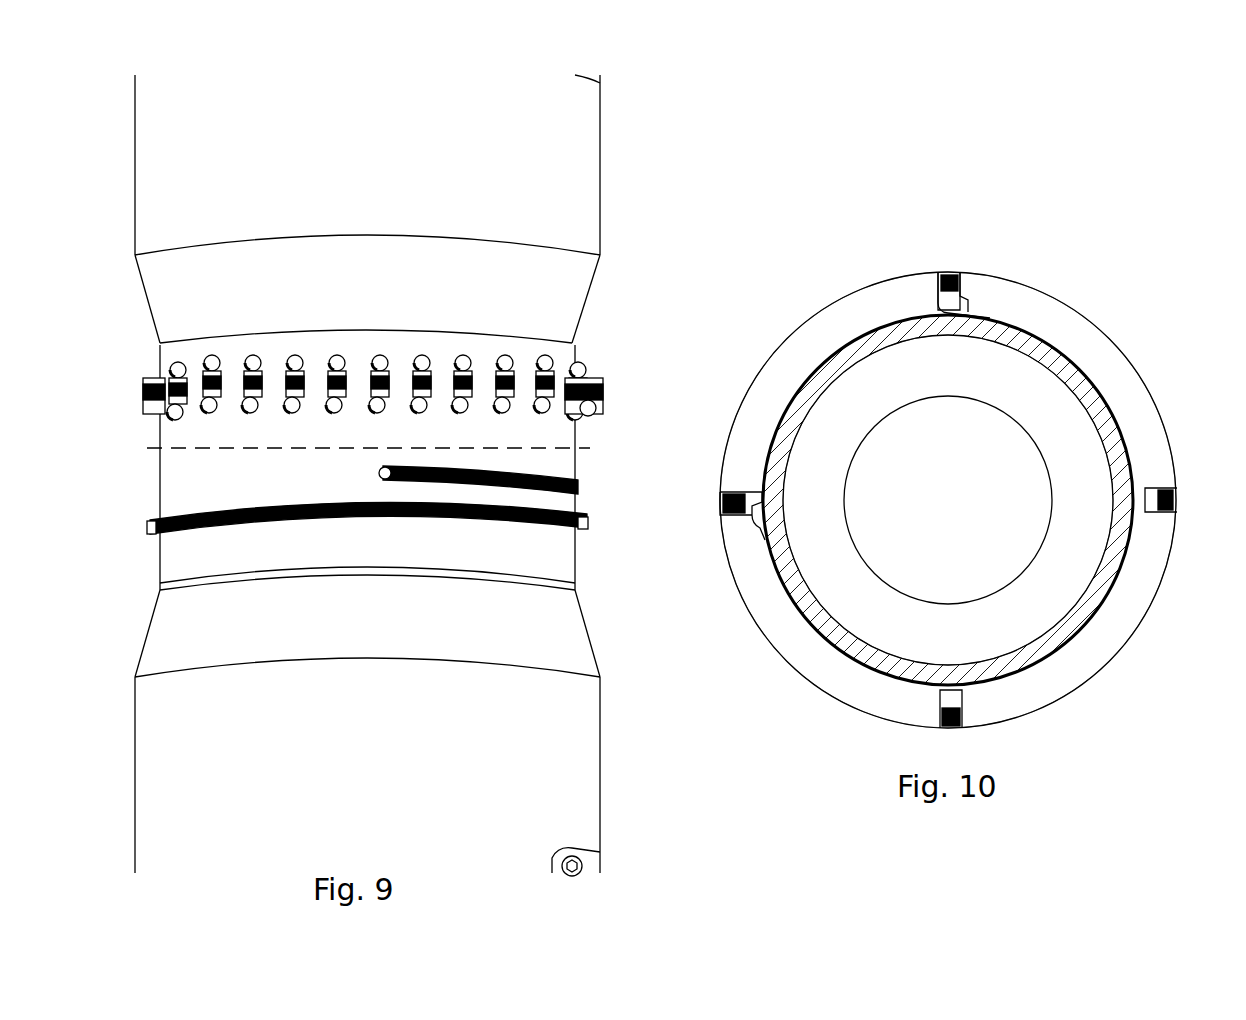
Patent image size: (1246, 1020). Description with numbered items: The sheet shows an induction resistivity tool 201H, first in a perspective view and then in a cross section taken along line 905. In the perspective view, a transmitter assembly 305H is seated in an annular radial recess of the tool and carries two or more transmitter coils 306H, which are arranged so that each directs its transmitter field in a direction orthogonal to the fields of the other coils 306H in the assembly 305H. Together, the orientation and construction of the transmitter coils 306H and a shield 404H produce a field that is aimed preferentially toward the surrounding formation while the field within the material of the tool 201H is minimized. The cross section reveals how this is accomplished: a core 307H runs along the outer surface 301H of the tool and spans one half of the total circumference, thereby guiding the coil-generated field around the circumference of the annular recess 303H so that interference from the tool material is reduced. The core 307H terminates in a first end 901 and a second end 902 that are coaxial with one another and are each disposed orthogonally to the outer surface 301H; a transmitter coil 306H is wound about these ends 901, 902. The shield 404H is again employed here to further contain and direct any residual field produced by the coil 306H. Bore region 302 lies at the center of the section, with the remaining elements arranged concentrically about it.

In FIG. 9, the induction tool 201H is at (104, 185).
In FIG. 9, the outer surface 301H is at (600, 122).
In FIG. 10, the outer surface 301H is at (793, 332).
In FIG. 9, the transmitter assembly 305H is at (157, 630).
In FIG. 9, the transmitter coil 306H is at (433, 370).
In FIG. 10, the transmitter coil 306H is at (958, 280).
In FIG. 9, the line 905 is at (587, 448).
In FIG. 9, the shield 404H is at (533, 552).
In FIG. 10, the shield 404H is at (830, 632).
In FIG. 10, the bore 302 is at (971, 514).
In FIG. 10, the annular recess 303H is at (1068, 678).
In FIG. 10, the core 307H is at (1000, 325).
In FIG. 10, the first end 901 is at (747, 470).
In FIG. 10, the second end 902 is at (928, 290).